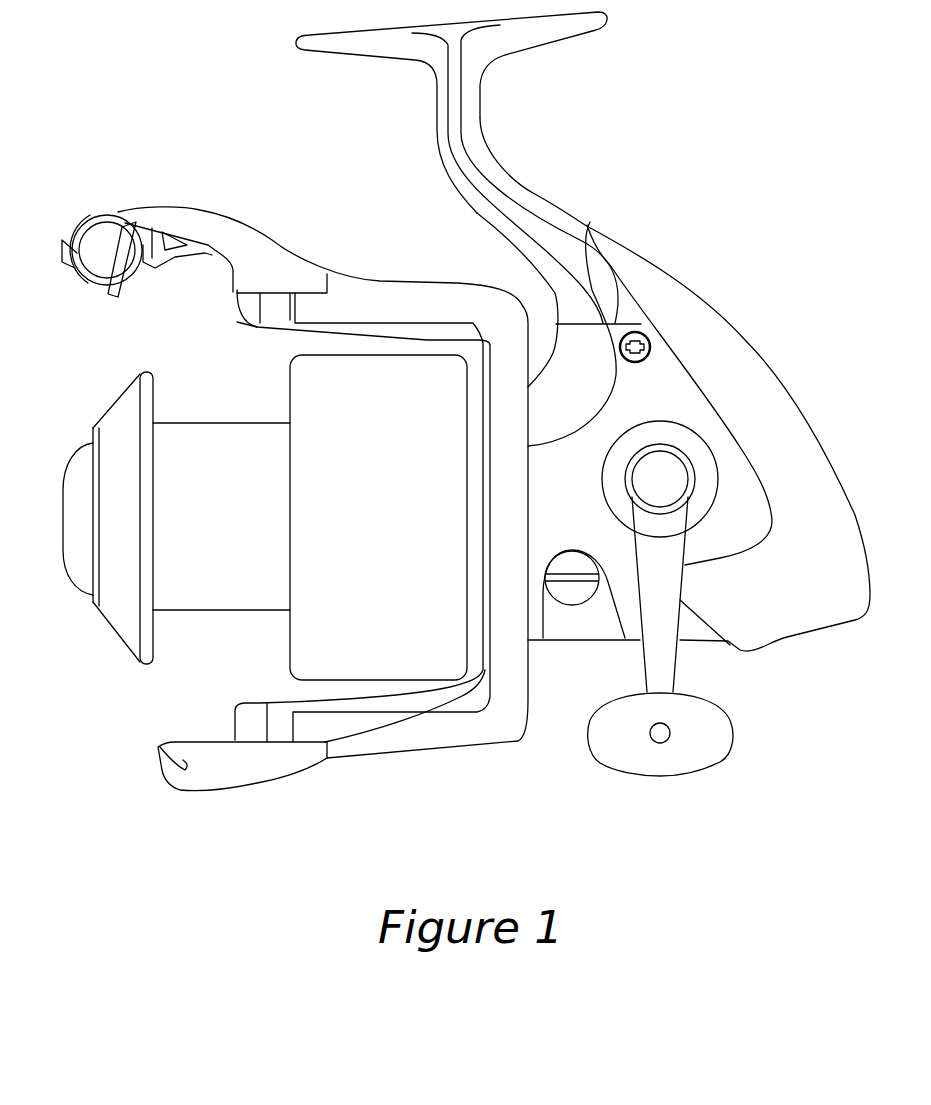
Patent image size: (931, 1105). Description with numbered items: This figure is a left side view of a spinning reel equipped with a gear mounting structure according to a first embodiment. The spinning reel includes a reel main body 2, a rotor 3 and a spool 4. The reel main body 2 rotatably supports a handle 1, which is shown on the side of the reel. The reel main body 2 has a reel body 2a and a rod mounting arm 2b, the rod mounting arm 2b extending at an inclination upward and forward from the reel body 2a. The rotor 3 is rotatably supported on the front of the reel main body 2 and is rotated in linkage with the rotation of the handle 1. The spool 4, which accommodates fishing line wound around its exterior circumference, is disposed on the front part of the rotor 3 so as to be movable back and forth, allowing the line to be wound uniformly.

The handle 1 is at (680, 672).
The reel main body 2 is at (573, 193).
The reel body 2a is at (587, 227).
The rod mounting arm 2b is at (480, 115).
The rotor 3 is at (488, 717).
The spool 4 is at (215, 597).